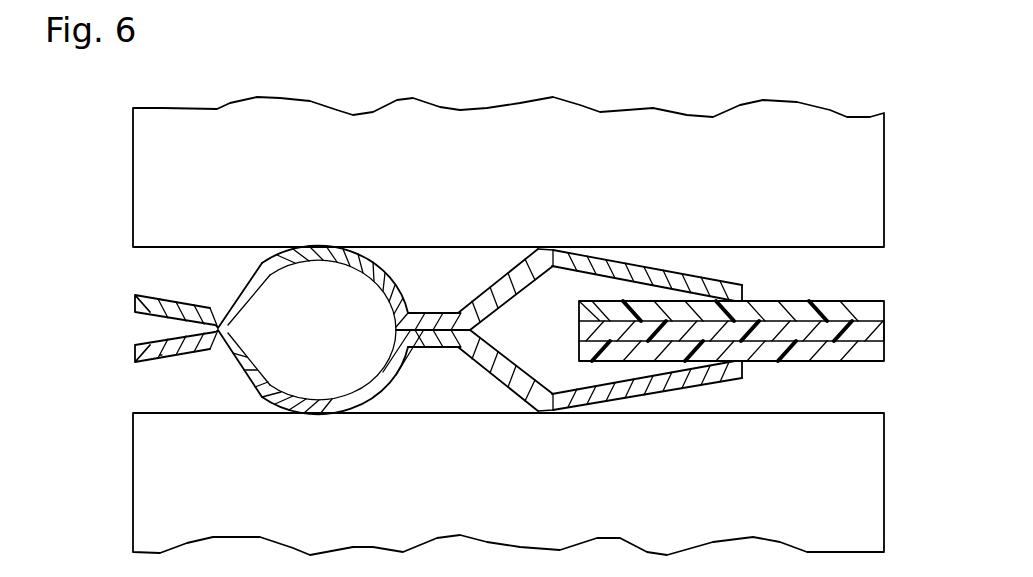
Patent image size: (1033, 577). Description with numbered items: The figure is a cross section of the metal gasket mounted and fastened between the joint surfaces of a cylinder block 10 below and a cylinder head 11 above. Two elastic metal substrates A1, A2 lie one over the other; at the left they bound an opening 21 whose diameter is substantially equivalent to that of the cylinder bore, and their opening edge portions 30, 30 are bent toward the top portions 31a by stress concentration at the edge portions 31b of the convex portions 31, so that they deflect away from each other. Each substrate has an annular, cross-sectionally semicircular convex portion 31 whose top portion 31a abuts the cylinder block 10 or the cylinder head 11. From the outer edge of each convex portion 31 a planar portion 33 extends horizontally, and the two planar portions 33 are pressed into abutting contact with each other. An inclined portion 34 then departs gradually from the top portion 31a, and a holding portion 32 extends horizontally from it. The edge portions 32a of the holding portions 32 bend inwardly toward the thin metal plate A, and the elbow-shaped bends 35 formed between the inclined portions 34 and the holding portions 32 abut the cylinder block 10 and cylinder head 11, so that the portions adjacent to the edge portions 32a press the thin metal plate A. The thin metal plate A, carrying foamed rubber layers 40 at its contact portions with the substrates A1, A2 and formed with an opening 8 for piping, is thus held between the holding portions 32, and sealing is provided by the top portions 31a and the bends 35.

The opening for piping 8 is at (758, 331).
The cylinder block 10 is at (497, 521).
The cylinder head 11 is at (497, 160).
The opening 21 is at (107, 339).
The opening edge portion 30 is at (135, 300).
The convex portion 31 is at (238, 290).
The top portion 31a is at (316, 247).
The edge portion of the convex portion 31b is at (193, 282).
The holding portion 32 is at (712, 280).
The edge portion of the holding portion 32a is at (742, 293).
The planar portion 33 is at (437, 312).
The inclined portion 34 is at (483, 293).
The elbow-shaped bend 35 is at (537, 248).
The foamed rubber layer 40 is at (850, 300).
The thin metal plate A is at (886, 333).
The elastic metal substrate A1 is at (160, 298).
The elastic metal substrate A2 is at (160, 357).